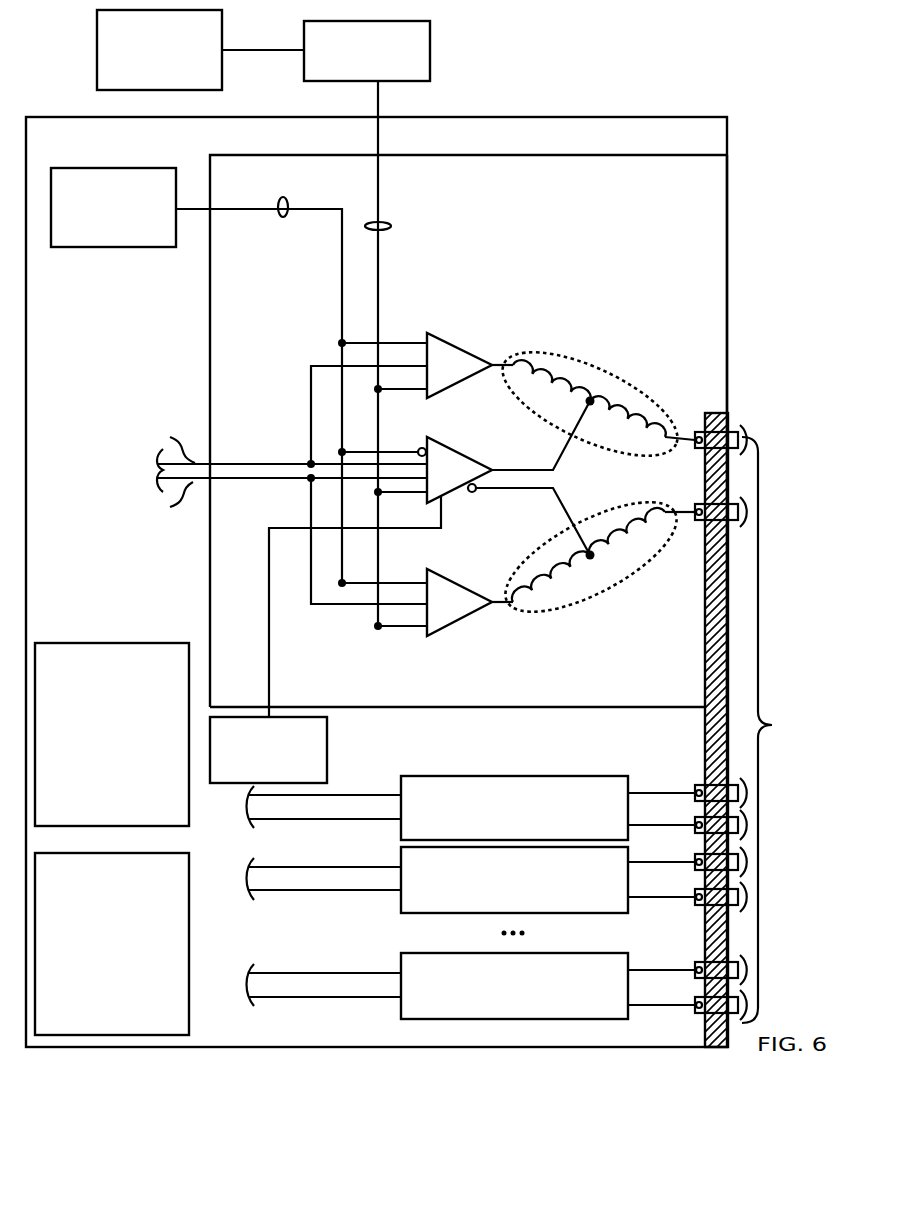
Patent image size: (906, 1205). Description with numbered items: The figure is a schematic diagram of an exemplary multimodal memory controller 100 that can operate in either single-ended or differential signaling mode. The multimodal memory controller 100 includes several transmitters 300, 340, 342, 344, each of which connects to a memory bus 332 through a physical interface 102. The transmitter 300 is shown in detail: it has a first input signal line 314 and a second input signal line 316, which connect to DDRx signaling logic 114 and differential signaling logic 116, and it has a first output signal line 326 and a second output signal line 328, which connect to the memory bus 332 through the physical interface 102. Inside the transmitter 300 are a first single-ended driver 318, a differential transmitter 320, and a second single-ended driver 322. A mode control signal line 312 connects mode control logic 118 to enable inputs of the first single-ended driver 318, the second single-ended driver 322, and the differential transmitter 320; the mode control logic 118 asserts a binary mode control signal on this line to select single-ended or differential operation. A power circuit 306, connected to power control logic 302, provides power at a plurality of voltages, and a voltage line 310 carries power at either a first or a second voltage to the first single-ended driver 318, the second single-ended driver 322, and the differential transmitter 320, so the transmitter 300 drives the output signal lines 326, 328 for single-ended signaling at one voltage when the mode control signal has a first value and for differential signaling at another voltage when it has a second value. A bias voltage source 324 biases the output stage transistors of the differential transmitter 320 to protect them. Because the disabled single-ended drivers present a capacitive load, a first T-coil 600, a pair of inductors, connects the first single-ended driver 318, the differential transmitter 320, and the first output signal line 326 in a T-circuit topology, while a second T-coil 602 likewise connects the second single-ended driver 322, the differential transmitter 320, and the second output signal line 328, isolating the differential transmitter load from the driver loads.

The multimodal memory controller 100 is at (295, 143).
The physical interface 102 is at (728, 413).
The DDRx signaling logic 114 is at (153, 756).
The differential signaling logic 116 is at (127, 980).
The mode control logic 118 is at (152, 227).
The transmitter 300 is at (723, 181).
The power control logic 302 is at (199, 72).
The power circuit 306 is at (382, 71).
The voltage line 310 is at (391, 225).
The mode control signal line 312 is at (282, 217).
The first input signal line 314 is at (187, 431).
The second input signal line 316 is at (187, 605).
The first single-ended driver 318 is at (465, 376).
The differential transmitter 320 is at (465, 483).
The second single-ended driver 322 is at (465, 613).
The bias voltage source 324 is at (315, 772).
The first output signal line 326 is at (683, 430).
The second output signal line 328 is at (686, 516).
The memory bus 332 is at (815, 761).
The transmitter 340 is at (578, 818).
The transmitter 342 is at (578, 890).
The transmitter 344 is at (578, 996).
The first T-coil 600 is at (575, 362).
The second T-coil 602 is at (577, 600).